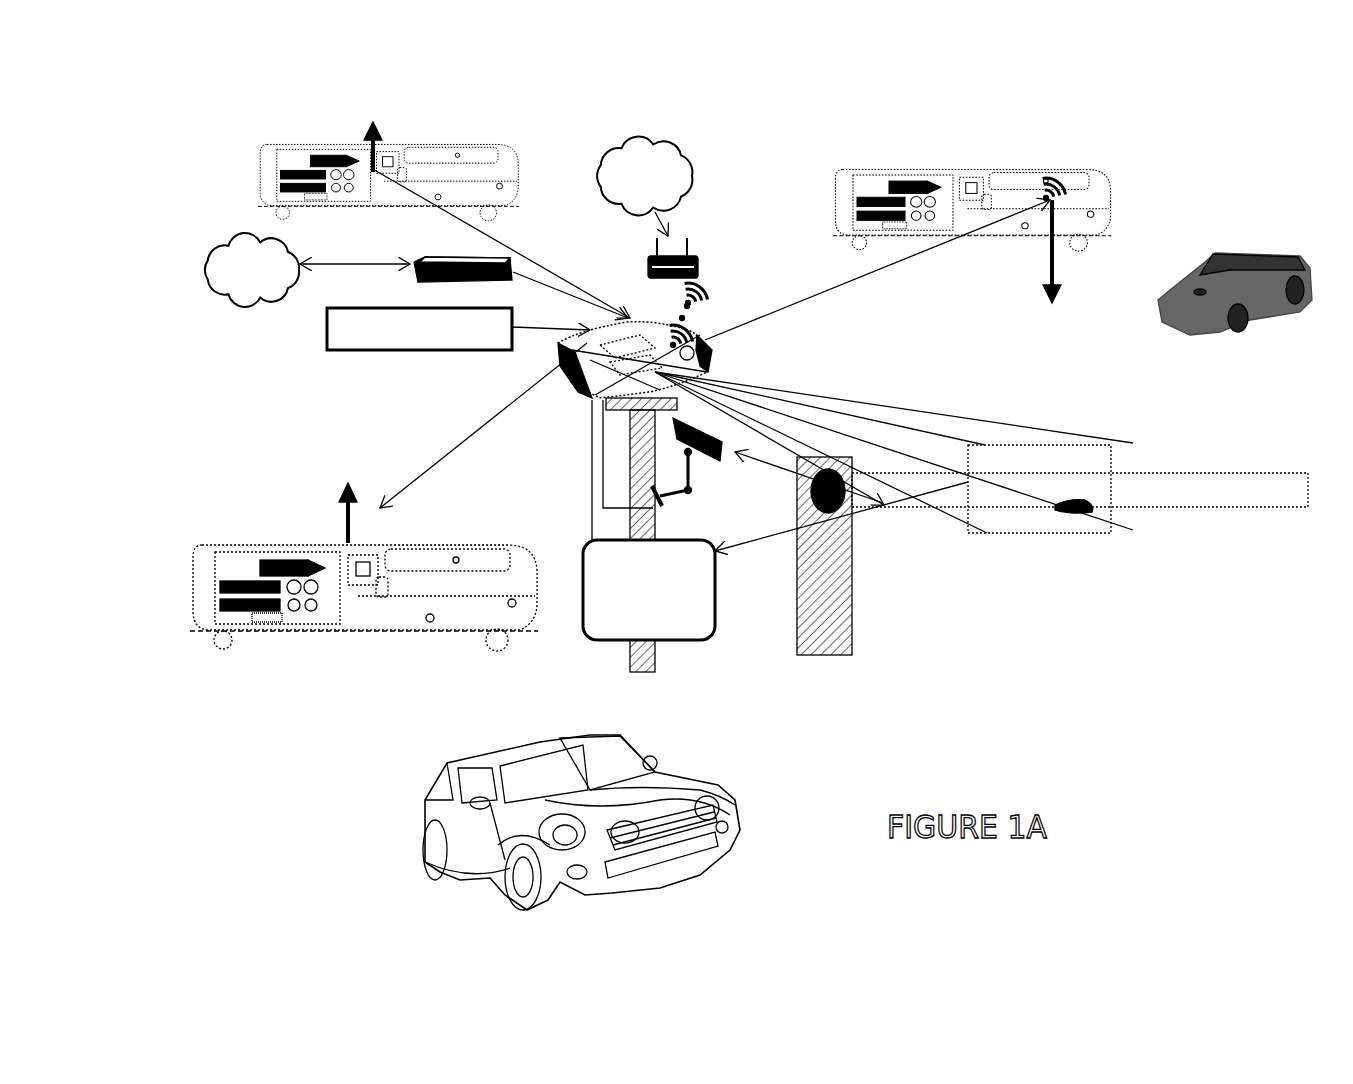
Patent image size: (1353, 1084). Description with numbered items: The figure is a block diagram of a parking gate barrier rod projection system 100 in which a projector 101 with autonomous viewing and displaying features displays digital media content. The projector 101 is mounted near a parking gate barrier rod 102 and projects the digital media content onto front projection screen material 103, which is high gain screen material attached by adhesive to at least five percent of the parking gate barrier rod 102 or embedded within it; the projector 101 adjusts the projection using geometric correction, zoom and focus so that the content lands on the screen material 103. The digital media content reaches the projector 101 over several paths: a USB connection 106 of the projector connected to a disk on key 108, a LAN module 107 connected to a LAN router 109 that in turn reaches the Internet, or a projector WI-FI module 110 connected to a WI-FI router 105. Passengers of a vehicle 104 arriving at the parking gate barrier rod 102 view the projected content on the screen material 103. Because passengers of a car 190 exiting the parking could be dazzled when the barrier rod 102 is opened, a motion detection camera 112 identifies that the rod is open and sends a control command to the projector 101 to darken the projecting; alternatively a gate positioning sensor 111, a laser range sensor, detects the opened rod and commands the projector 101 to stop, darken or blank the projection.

The system 100 is at (88, 230).
The projector 101 is at (700, 338).
The parking gate barrier rod 102 is at (1218, 466).
The front projection screen material 103 is at (1022, 428).
The vehicle 104 is at (622, 712).
The WI-FI router 105 is at (706, 251).
The USB connection 106 is at (372, 543).
The LAN module 107 is at (462, 124).
The disk on key 108 is at (427, 347).
The LAN router 109 is at (434, 208).
The projector WI-FI module 110 is at (1047, 174).
The gate positioning sensor 111 is at (743, 628).
The camera 112 is at (687, 403).
The car 190 is at (1300, 240).